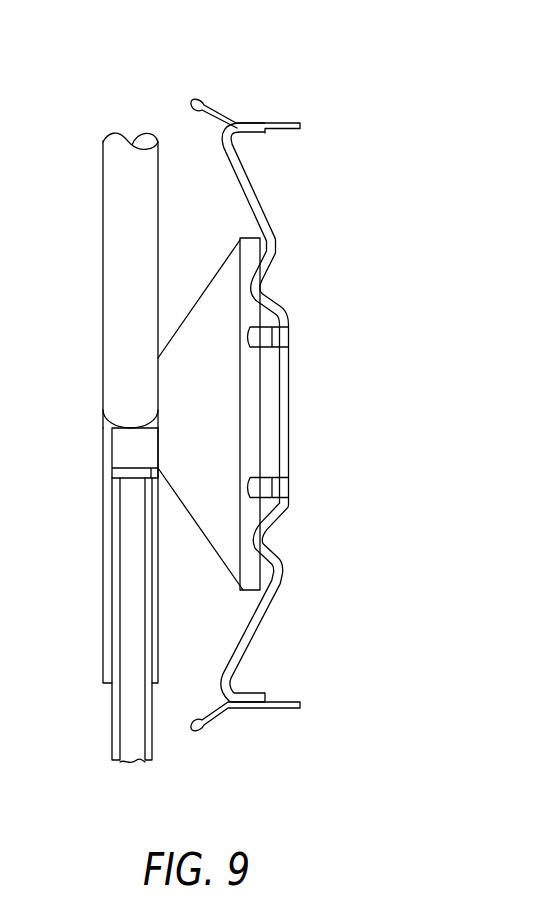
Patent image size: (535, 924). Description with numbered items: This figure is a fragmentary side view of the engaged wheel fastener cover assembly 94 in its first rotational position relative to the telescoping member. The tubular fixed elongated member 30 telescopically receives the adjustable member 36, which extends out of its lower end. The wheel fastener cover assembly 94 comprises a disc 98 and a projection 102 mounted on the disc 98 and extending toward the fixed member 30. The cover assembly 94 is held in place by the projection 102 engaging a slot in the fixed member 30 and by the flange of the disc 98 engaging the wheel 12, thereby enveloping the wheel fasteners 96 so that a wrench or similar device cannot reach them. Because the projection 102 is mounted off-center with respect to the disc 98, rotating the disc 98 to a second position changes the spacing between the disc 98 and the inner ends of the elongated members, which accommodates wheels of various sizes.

The wheel 12 is at (251, 187).
The fixed elongated member 30 is at (130, 273).
The adjustable member 36 is at (128, 732).
The wheel fastener cover assembly 94 is at (194, 268).
The wheel fasteners 96 is at (268, 487).
The disc 98 is at (201, 532).
The projection 102 is at (130, 452).